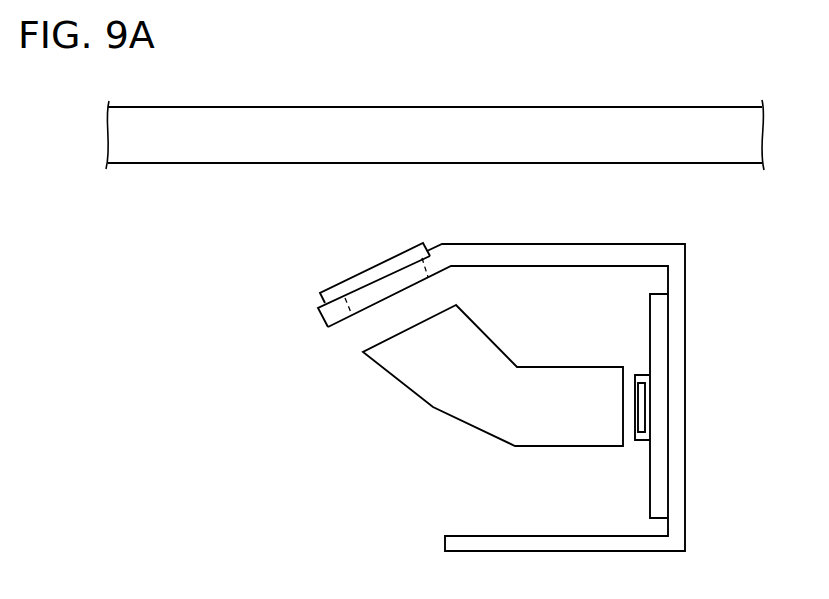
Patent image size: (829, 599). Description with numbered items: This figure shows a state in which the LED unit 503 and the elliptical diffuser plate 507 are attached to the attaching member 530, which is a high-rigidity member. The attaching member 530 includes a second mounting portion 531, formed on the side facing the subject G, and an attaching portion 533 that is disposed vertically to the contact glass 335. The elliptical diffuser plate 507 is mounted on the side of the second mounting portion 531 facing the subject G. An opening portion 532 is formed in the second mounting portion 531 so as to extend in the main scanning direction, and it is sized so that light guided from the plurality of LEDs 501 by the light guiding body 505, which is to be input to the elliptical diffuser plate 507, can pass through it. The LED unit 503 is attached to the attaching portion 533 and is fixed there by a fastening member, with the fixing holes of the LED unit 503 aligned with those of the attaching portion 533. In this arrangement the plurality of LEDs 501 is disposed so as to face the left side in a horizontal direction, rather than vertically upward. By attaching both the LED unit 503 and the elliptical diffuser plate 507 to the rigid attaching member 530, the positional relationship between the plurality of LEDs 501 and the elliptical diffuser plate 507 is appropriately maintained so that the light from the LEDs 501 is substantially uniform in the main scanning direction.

The subject G is at (367, 95).
The contact glass 335 is at (700, 106).
The attaching member 530 is at (687, 255).
The second mounting portion 531 is at (319, 322).
The elliptical diffuser plate 507 is at (430, 242).
The opening portion 532 is at (365, 300).
The light guiding body 505 is at (487, 432).
The LEDs 501 is at (650, 408).
The LED unit 503 is at (658, 501).
The attaching portion 533 is at (665, 280).